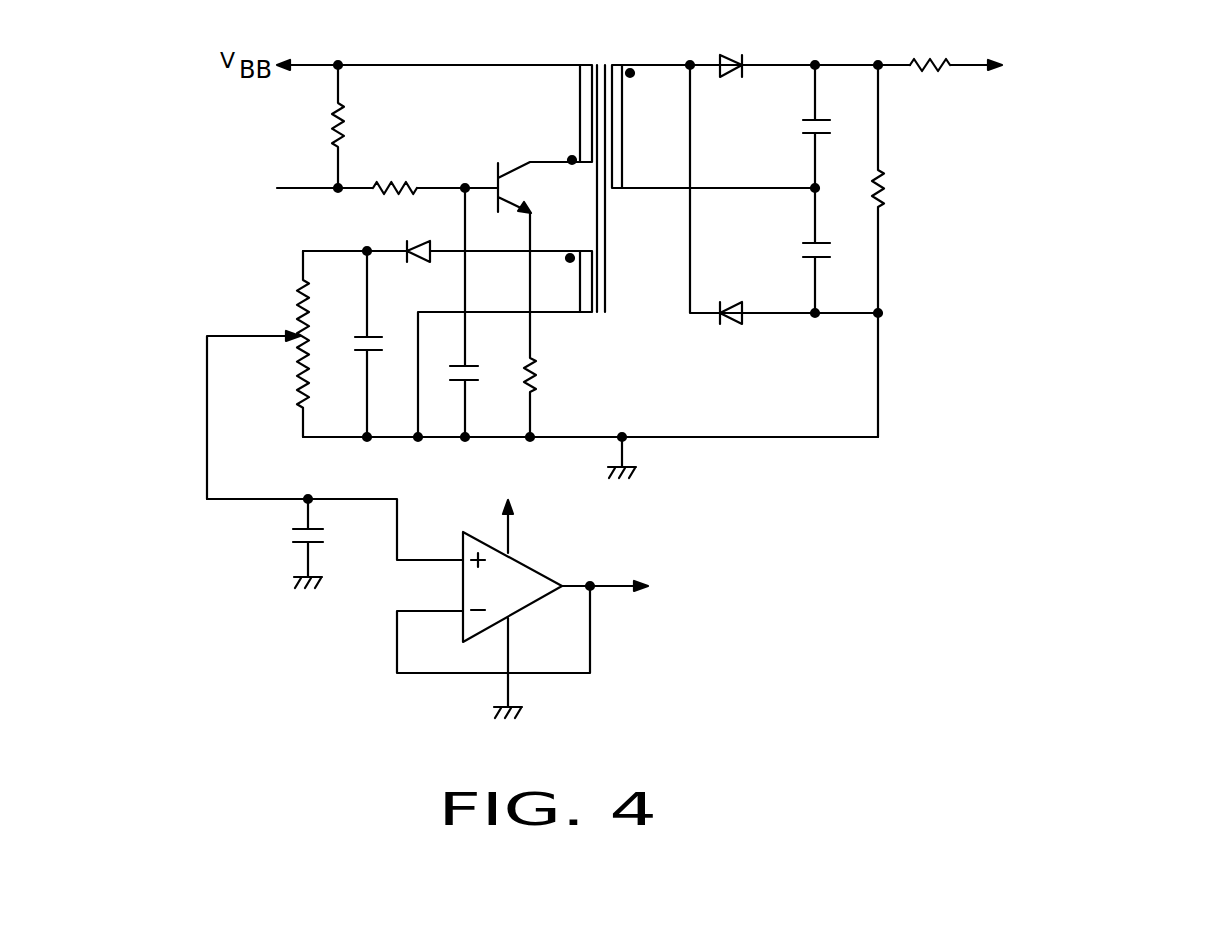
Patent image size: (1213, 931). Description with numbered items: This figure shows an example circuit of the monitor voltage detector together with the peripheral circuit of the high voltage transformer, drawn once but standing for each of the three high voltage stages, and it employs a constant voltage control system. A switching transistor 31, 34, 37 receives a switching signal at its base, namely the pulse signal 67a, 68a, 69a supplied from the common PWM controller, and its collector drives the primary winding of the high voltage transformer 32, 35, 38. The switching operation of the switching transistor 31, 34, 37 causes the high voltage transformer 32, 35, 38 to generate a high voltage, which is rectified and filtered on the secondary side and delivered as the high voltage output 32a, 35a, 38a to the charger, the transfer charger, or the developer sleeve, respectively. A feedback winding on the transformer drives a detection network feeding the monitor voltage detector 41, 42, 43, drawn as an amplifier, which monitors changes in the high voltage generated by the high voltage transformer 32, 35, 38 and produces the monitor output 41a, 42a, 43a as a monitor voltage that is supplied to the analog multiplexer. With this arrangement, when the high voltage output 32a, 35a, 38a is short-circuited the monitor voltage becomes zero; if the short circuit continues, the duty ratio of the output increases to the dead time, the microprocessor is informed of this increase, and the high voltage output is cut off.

The switching transistor 31 is at (473, 153).
The switching transistor 34 is at (473, 153).
The switching transistor 37 is at (493, 162).
The high voltage transformer 32 is at (623, 168).
The high voltage transformer 35 is at (623, 168).
The high voltage transformer 38 is at (607, 60).
The high voltage output 32a is at (1056, 99).
The high voltage output 35a is at (1056, 99).
The high voltage output 38a is at (1056, 99).
The pulse signal 67a is at (299, 199).
The pulse signal 68a is at (299, 199).
The pulse signal 69a is at (299, 199).
The monitor voltage detector 41 is at (552, 594).
The monitor voltage detector 42 is at (552, 594).
The monitor voltage detector 43 is at (525, 555).
The monitor output 41a is at (738, 599).
The monitor output 42a is at (738, 599).
The monitor output 43a is at (738, 599).